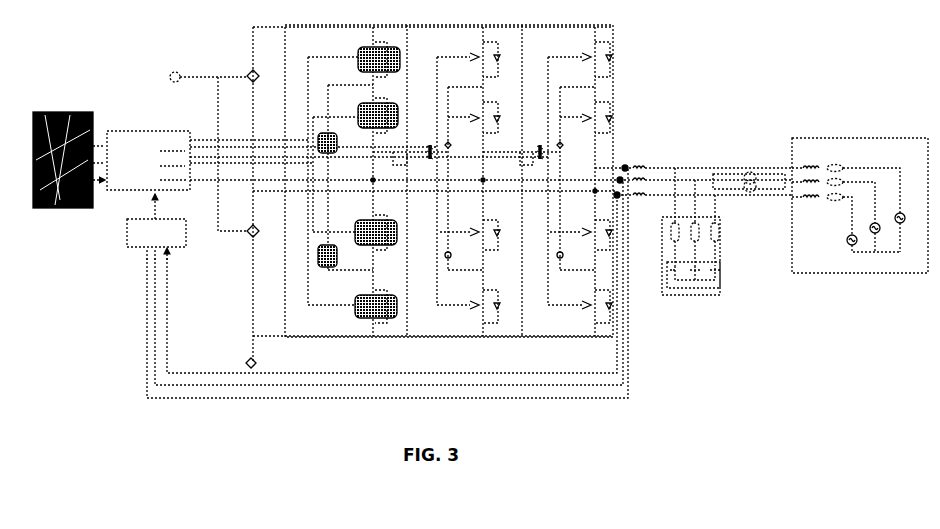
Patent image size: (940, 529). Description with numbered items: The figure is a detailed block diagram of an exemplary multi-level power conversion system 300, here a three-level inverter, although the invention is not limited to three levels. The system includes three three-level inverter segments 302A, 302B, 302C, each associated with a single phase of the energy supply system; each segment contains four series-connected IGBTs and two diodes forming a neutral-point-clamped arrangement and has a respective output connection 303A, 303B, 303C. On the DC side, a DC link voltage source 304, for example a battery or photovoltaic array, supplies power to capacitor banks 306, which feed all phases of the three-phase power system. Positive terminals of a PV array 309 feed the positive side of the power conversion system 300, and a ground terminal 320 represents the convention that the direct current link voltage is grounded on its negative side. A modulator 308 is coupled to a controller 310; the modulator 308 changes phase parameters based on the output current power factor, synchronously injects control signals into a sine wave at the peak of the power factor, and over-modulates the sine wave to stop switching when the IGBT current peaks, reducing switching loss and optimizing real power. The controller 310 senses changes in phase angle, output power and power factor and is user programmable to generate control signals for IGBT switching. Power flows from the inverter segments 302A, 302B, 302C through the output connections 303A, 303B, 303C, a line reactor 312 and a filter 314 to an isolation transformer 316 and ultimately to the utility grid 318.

The multi-level power conversion system 300 is at (468, 25).
The 3-level inverter segment 302A is at (377, 181).
The 3-level inverter segment 302B is at (497, 181).
The 3-level inverter segment 302C is at (586, 181).
The output connection 303A is at (372, 178).
The output connection 303B is at (482, 180).
The output connection 303C is at (592, 189).
The DC link voltage source 304 is at (170, 71).
The capacitor banks 306 is at (247, 71).
The modulator 308 is at (124, 196).
The PV array 309 is at (78, 212).
The controller 310 is at (128, 258).
The line reactor 312 is at (648, 153).
The filter 314 is at (733, 301).
The isolation transformer 316 is at (752, 174).
The utility grid 318 is at (860, 205).
The ground terminal 320 is at (261, 363).